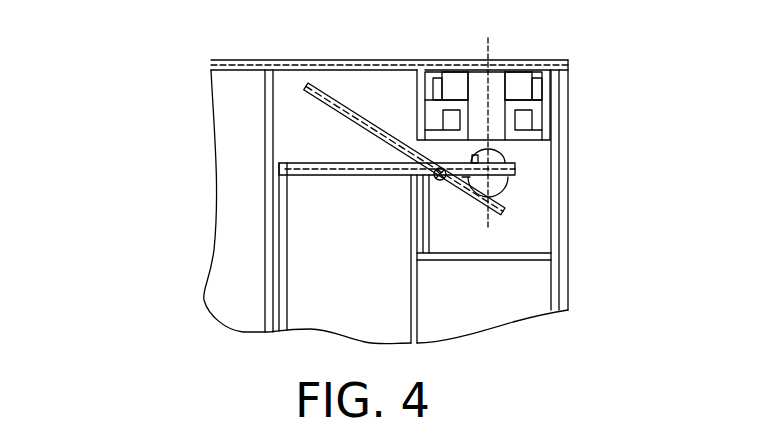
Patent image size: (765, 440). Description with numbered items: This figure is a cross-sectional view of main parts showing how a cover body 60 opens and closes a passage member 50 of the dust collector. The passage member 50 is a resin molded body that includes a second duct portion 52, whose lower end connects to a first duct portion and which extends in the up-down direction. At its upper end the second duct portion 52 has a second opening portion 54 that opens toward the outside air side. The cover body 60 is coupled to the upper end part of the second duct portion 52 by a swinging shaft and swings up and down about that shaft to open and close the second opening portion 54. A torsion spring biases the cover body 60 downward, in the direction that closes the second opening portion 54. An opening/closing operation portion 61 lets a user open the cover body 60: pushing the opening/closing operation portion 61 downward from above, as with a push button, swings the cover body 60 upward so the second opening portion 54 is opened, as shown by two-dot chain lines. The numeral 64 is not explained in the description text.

The passage member 50 is at (280, 222).
The second duct portion 52 is at (287, 288).
The second opening portion 54 is at (313, 188).
The cover body 60 is at (318, 190).
The opening/closing operation portion 61 is at (497, 67).
The pivot pin 64 is at (441, 178).